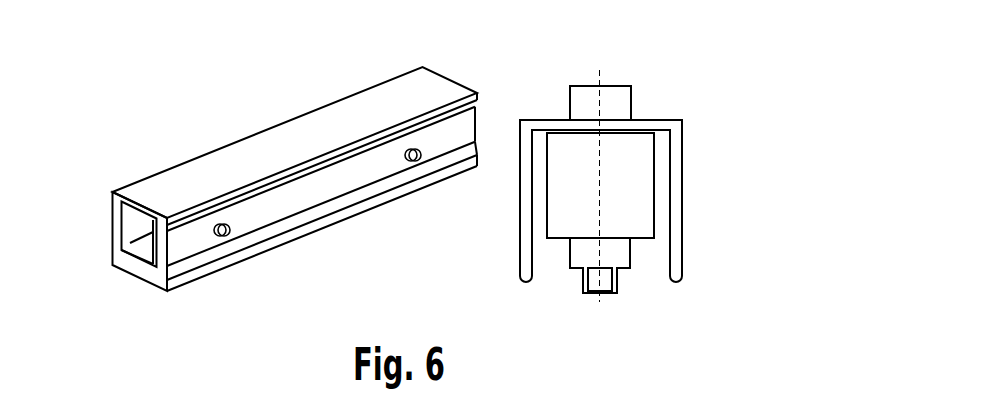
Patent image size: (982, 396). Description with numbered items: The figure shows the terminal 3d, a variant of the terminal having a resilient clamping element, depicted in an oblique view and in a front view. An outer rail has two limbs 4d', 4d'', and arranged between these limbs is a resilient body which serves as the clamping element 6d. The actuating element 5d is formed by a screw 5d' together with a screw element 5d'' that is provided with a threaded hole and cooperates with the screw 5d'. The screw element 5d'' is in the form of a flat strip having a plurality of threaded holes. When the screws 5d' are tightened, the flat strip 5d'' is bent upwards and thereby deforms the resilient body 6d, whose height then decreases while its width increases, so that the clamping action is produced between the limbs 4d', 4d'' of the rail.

The terminal 3d is at (124, 83).
The limb of the outer rail 4d' is at (643, 201).
The limb of the outer rail 4d'' is at (648, 254).
The actuating element 5d is at (816, 137).
The screw 5d' is at (667, 108).
The screw element 5d'' is at (407, 226).
The clamping element 6d is at (133, 230).